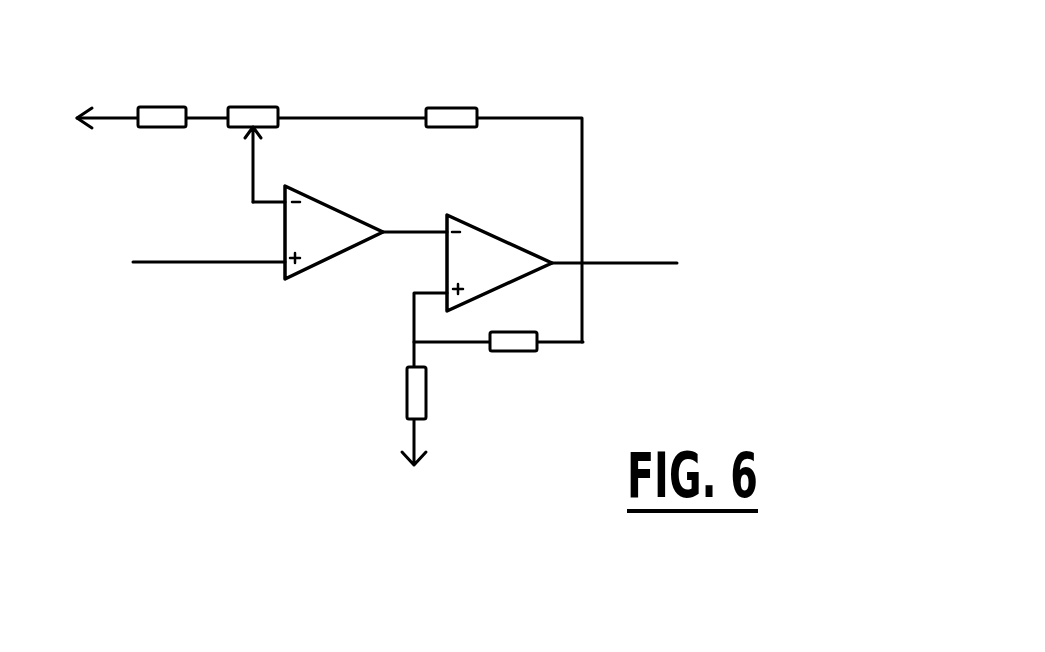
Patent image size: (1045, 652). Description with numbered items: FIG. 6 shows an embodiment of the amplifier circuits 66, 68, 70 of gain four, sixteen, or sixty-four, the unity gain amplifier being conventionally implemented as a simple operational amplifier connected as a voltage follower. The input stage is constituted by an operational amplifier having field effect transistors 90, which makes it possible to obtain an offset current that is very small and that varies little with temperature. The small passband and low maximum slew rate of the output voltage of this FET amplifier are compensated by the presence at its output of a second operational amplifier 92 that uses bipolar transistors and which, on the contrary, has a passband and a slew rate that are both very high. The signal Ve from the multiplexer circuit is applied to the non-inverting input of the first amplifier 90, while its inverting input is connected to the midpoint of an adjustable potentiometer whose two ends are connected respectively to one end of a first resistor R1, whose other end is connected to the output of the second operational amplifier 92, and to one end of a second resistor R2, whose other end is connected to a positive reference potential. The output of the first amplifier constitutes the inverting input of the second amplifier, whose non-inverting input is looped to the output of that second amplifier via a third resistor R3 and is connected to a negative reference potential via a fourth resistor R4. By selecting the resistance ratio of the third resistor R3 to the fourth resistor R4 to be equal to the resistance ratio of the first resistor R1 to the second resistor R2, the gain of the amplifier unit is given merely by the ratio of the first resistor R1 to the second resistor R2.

The amplifier circuit 66 is at (402, 236).
The amplifier circuit 68 is at (402, 236).
The amplifier circuit 70 is at (606, 129).
The operational amplifier having field effect transistors 90 is at (318, 205).
The second operational amplifier 92 is at (495, 255).
The first resistor R1 is at (451, 96).
The second resistor R2 is at (162, 97).
The third resistor R3 is at (513, 360).
The fourth resistor R4 is at (396, 393).